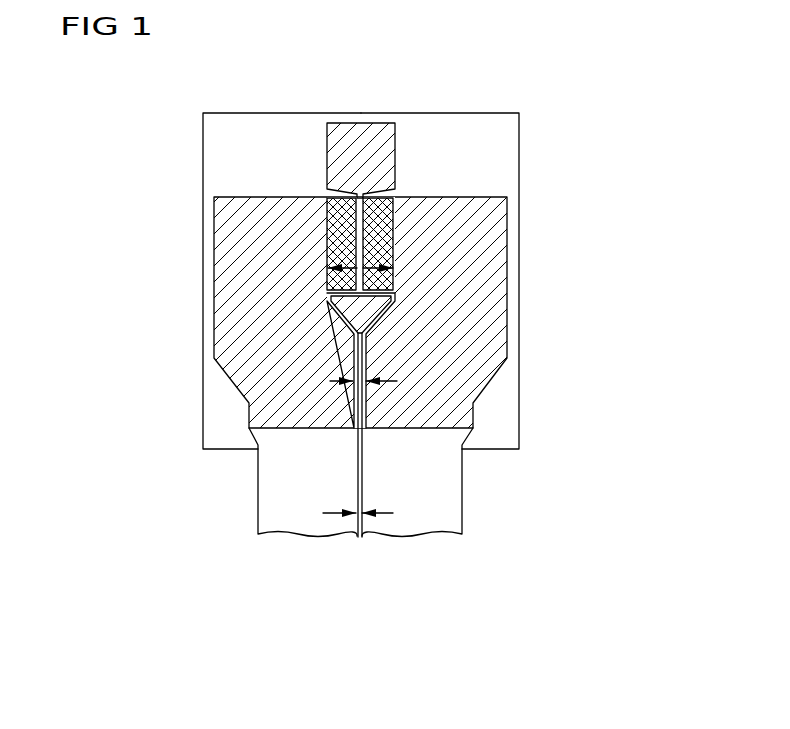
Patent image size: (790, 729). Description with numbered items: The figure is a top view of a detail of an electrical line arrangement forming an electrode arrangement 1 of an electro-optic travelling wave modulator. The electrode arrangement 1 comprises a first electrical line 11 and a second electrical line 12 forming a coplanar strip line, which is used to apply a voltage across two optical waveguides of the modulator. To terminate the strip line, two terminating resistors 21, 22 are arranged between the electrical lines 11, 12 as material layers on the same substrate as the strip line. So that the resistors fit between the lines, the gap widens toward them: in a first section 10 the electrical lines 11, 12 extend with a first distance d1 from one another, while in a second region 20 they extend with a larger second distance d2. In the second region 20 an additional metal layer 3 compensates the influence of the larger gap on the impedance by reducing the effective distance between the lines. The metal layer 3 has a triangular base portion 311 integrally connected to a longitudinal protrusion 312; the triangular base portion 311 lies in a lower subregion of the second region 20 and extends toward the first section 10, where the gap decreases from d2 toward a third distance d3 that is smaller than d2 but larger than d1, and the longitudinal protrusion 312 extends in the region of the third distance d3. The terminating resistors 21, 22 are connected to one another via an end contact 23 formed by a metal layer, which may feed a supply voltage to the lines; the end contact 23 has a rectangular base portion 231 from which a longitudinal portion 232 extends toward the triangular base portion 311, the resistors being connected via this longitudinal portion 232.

The electrode arrangement 1 is at (548, 116).
The first section 10 is at (503, 517).
The first electrical line 11 is at (177, 328).
The second electrical line 12 is at (515, 309).
The second region 20 is at (522, 272).
The first terminating resistor 21 is at (353, 197).
The second terminating resistor 22 is at (390, 210).
The end contact 23 is at (358, 138).
The base portion 231 is at (387, 140).
The longitudinal portion 232 is at (390, 245).
The metal layer 3 is at (353, 416).
The triangular base portion 311 is at (350, 315).
The longitudinal protrusion 312 is at (356, 402).
The first distance d1 is at (361, 496).
The second distance d2 is at (335, 250).
The third distance d3 is at (365, 383).